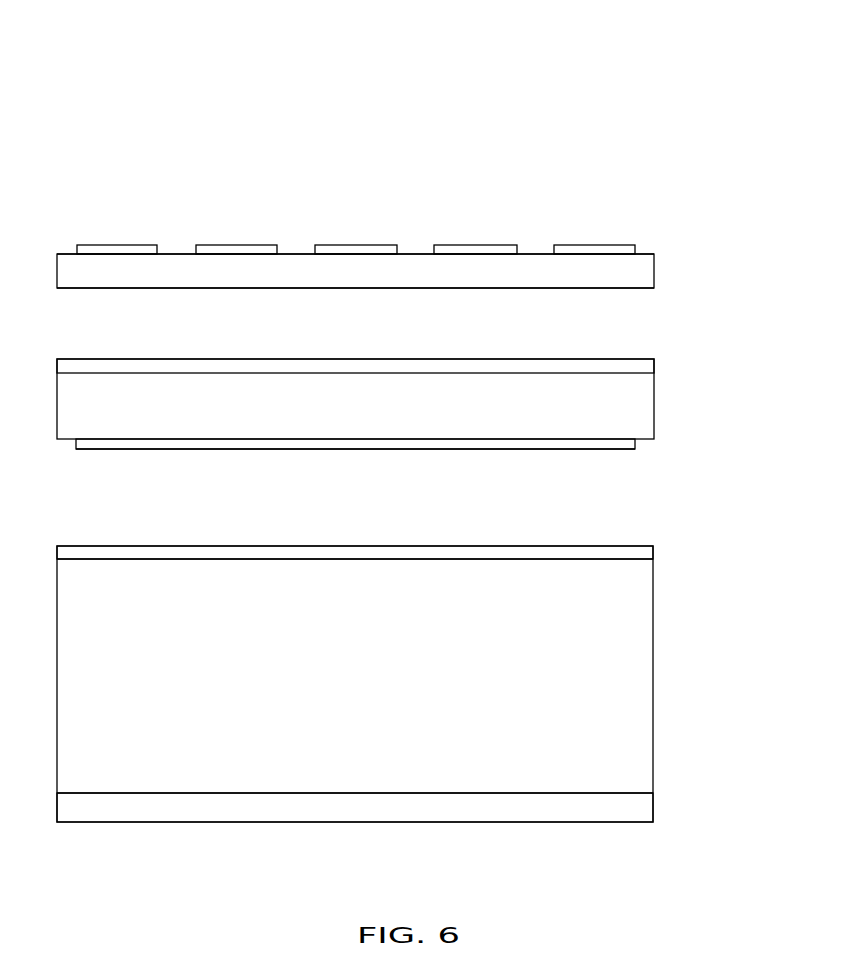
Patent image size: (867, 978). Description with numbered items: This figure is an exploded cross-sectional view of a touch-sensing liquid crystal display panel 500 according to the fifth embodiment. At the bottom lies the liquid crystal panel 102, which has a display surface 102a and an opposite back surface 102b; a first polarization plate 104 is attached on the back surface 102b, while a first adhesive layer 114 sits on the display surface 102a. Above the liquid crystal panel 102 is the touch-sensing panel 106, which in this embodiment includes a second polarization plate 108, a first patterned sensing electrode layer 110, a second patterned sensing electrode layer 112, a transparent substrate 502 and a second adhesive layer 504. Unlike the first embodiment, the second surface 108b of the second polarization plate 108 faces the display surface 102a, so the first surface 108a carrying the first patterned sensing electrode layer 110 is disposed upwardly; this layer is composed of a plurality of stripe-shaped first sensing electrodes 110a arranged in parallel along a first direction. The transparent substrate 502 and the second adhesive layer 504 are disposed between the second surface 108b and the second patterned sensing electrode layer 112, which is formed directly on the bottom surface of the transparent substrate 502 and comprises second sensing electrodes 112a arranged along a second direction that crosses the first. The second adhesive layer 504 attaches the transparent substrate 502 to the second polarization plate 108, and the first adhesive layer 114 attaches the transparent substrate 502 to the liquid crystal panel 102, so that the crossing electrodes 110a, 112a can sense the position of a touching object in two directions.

The touch-sensing liquid crystal display panel 500 is at (669, 63).
The touch-sensing panel 106 is at (722, 192).
The second polarization plate 108 is at (630, 278).
The first surface 108a is at (645, 253).
The second surface 108b is at (612, 288).
The first patterned sensing electrode layer 110 is at (68, 242).
The first sensing electrodes 110a is at (122, 245).
The transparent substrate 502 is at (632, 416).
The second adhesive layer 504 is at (650, 365).
The second patterned sensing electrode layer 112 is at (68, 460).
The second sensing electrodes 112a is at (352, 450).
The liquid crystal panel 102 is at (625, 698).
The display surface 102a is at (638, 558).
The back surface 102b is at (630, 793).
The first adhesive layer 114 is at (653, 550).
The first polarization plate 104 is at (643, 813).